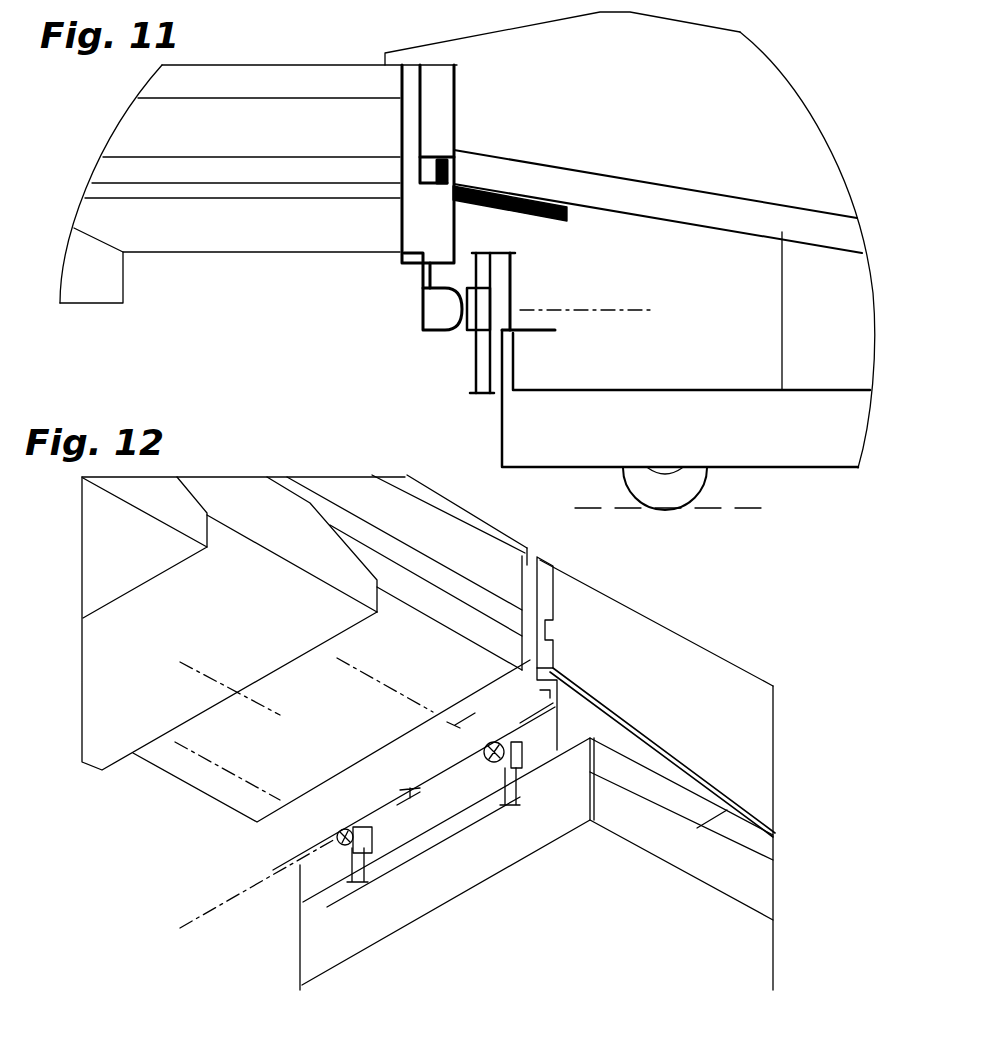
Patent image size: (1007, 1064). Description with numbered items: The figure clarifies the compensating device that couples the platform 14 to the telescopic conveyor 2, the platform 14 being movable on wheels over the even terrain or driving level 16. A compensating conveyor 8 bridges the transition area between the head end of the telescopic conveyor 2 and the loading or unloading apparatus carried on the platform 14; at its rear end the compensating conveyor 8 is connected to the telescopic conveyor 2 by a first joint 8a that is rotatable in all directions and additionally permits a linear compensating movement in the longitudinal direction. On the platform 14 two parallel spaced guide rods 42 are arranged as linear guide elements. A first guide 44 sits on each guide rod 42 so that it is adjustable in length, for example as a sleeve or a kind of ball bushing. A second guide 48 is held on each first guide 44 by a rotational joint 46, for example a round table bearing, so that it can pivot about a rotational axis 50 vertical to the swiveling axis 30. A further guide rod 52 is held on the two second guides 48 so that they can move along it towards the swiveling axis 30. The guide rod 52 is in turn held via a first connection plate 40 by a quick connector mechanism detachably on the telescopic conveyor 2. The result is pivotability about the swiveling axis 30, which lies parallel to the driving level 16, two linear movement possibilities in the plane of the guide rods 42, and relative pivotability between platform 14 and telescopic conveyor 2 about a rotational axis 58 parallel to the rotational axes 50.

In FIG. 11, the telescopic conveyor 2 is at (197, 237).
In FIG. 12, the telescopic conveyor 2 is at (145, 775).
In FIG. 11, the compensating conveyor 8 is at (635, 192).
In FIG. 11, the first joint 8a is at (480, 112).
In FIG. 11, the platform 14 is at (593, 412).
In FIG. 12, the platform 14 is at (763, 893).
In FIG. 11, the driving level 16 is at (722, 510).
In FIG. 11, the swiveling axis 30 is at (436, 311).
In FIG. 12, the swiveling axis 30 is at (207, 915).
In FIG. 12, the first connection plate 40 is at (560, 737).
In FIG. 11, the guide rods 42 is at (472, 377).
In FIG. 12, the guide rods 42 is at (360, 850).
In FIG. 11, the first guide 44 is at (477, 328).
In FIG. 12, the first guide 44 is at (370, 838).
In FIG. 11, the rotational joint 46 is at (480, 310).
In FIG. 12, the rotational joint 46 is at (497, 777).
In FIG. 12, the second guide 48 is at (340, 836).
In FIG. 11, the rotational axis 50 is at (604, 288).
In FIG. 12, the rotational axis 50 is at (337, 660).
In FIG. 11, the guide rod 52 is at (393, 320).
In FIG. 11, the rotational axis 58 is at (597, 312).
In FIG. 12, the rotational axis 58 is at (180, 662).